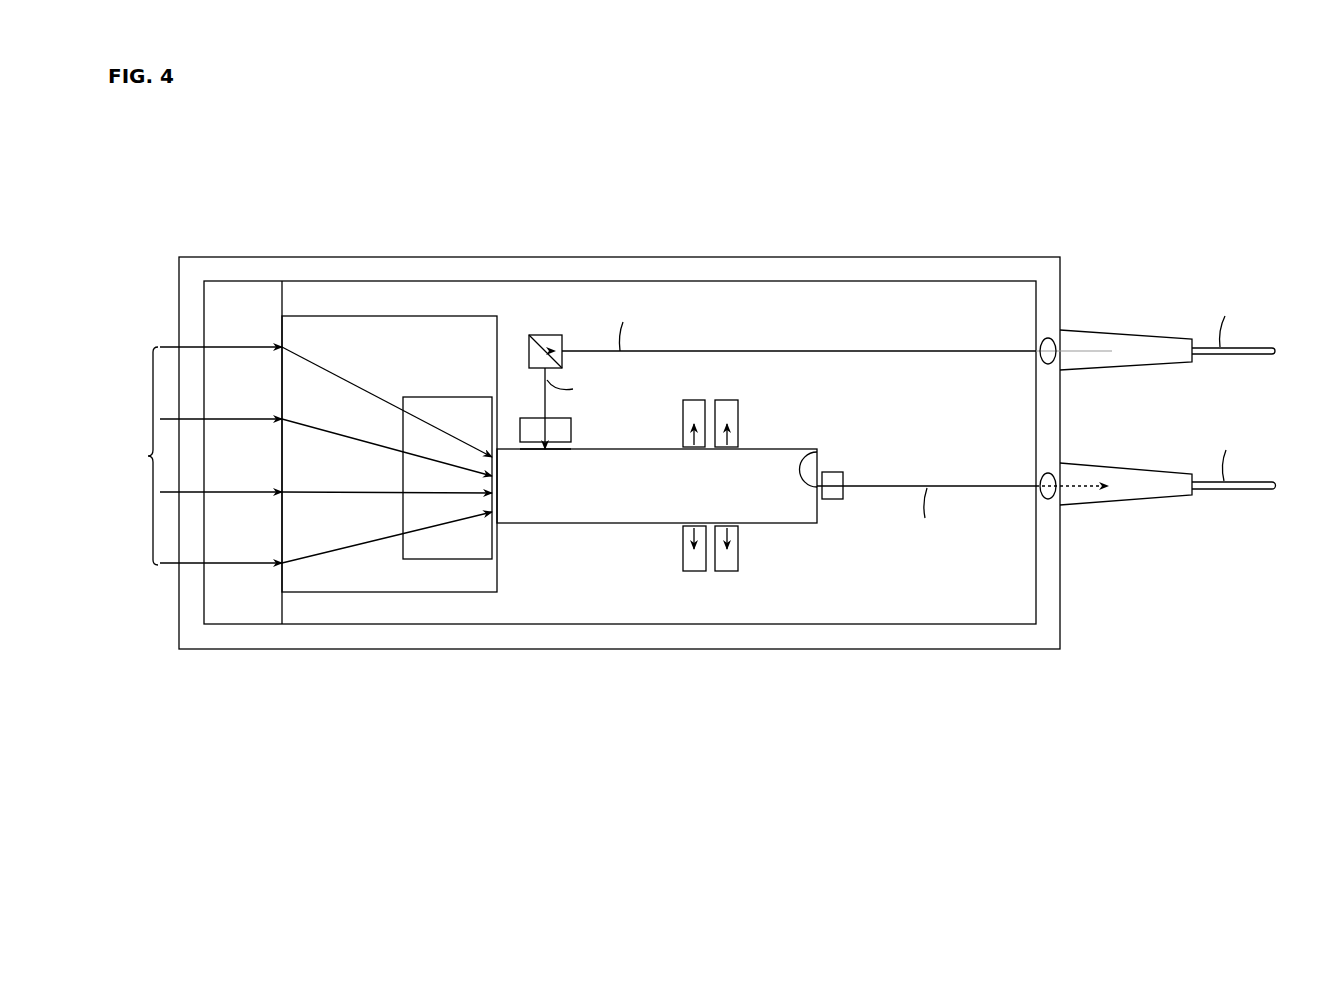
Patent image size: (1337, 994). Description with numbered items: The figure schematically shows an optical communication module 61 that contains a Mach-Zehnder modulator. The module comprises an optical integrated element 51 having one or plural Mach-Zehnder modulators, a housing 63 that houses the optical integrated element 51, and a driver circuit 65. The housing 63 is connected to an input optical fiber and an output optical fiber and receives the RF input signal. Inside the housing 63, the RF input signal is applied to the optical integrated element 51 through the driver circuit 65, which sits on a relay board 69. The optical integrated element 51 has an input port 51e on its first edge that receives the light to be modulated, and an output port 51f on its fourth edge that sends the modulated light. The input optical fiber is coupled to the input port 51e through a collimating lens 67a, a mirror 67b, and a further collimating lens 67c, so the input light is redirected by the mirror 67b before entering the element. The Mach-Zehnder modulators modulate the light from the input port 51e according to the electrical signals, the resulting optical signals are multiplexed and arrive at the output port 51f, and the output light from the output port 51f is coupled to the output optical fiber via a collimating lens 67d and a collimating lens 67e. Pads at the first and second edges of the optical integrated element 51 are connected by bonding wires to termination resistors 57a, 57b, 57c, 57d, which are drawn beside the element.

The optical communication module 61 is at (921, 690).
The housing 63 is at (815, 650).
The driver circuit 65 is at (420, 397).
The relay board 69 is at (461, 316).
The optical integrated element 51 is at (554, 524).
The input port 51e is at (548, 452).
The output port 51f is at (812, 450).
The termination resistor 57a is at (690, 400).
The termination resistor 57b is at (728, 400).
The termination resistor 57c is at (732, 572).
The termination resistor 57d is at (690, 572).
The collimating lens 67a is at (1050, 338).
The mirror 67b is at (548, 340).
The collimating lens 67c is at (572, 428).
The collimating lens 67d is at (838, 500).
The collimating lens 67e is at (1050, 472).